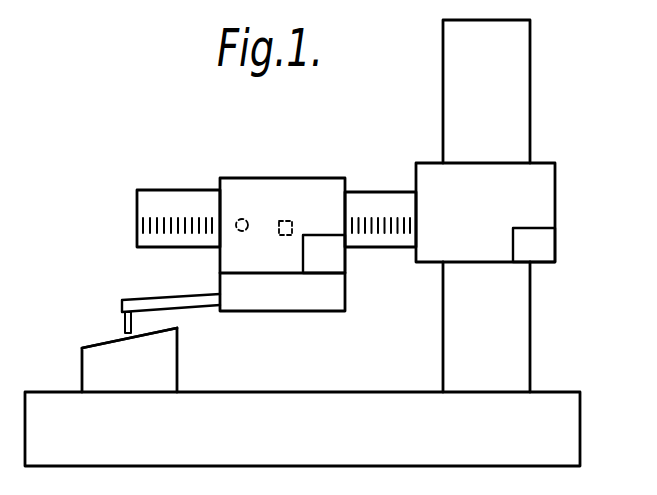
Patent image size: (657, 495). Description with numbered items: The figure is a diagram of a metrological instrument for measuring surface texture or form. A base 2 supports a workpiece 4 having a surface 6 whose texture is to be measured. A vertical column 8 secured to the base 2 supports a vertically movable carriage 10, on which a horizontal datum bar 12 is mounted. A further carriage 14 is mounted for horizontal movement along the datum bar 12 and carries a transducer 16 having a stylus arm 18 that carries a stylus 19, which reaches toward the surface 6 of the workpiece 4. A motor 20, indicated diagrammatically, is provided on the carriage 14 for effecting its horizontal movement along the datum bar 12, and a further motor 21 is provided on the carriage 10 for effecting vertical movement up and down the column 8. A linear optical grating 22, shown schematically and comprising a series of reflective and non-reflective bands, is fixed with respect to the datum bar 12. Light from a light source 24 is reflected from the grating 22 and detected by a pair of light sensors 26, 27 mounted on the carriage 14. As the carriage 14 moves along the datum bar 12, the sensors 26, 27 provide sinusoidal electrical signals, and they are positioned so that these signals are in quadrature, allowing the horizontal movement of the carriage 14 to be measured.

The base 2 is at (384, 412).
The workpiece 4 is at (90, 375).
The surface 6 is at (103, 342).
The vertical column 8 is at (508, 125).
The carriage 10 is at (532, 207).
The horizontal datum bar 12 is at (172, 202).
The further carriage 14 is at (276, 188).
The transducer 16 is at (253, 296).
The stylus arm 18 is at (164, 298).
The stylus 19 is at (124, 323).
The motor 20 is at (330, 255).
The further motor 21 is at (547, 247).
The linear optical grating 22 is at (373, 232).
The light source 24 is at (241, 218).
The light sensor 26 is at (288, 219).
The light sensor 27 is at (289, 237).